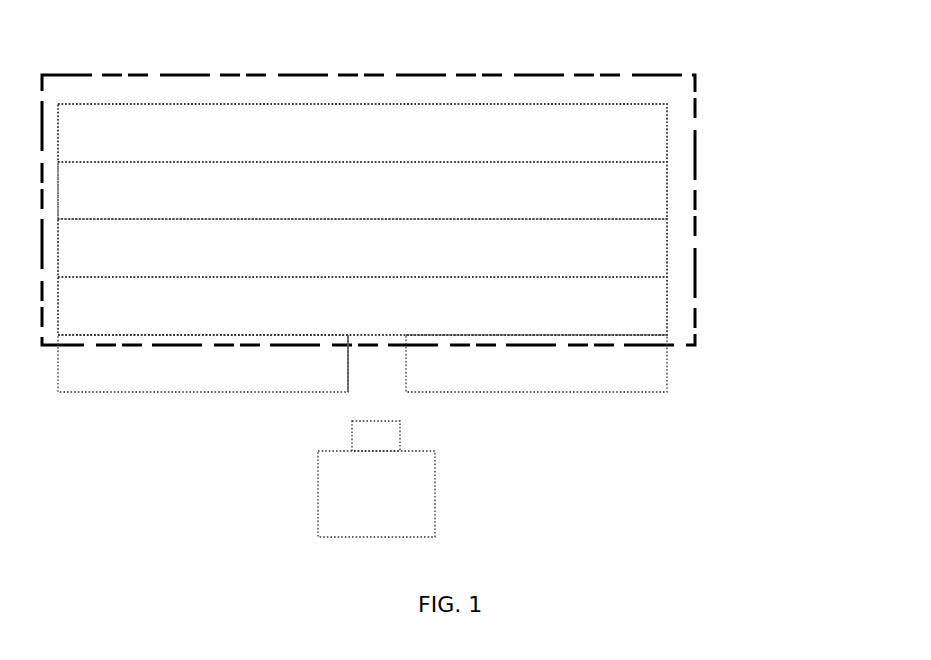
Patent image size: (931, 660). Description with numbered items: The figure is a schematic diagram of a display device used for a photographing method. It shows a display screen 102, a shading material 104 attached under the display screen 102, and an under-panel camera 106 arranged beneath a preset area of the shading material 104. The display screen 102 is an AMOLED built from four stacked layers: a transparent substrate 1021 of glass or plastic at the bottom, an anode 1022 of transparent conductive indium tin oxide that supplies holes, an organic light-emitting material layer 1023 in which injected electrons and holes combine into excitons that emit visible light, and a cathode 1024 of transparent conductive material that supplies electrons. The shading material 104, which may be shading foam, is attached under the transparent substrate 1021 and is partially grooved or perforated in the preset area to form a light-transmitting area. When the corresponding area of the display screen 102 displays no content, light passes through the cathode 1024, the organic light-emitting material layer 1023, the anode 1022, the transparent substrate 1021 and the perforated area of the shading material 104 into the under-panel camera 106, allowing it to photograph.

The display screen 102 is at (695, 79).
The cathode 1024 is at (667, 132).
The organic light-emitting material layer 1023 is at (667, 190).
The anode 1022 is at (667, 250).
The transparent substrate 1021 is at (667, 307).
The shading material 104 is at (667, 364).
The under-panel camera 106 is at (435, 492).